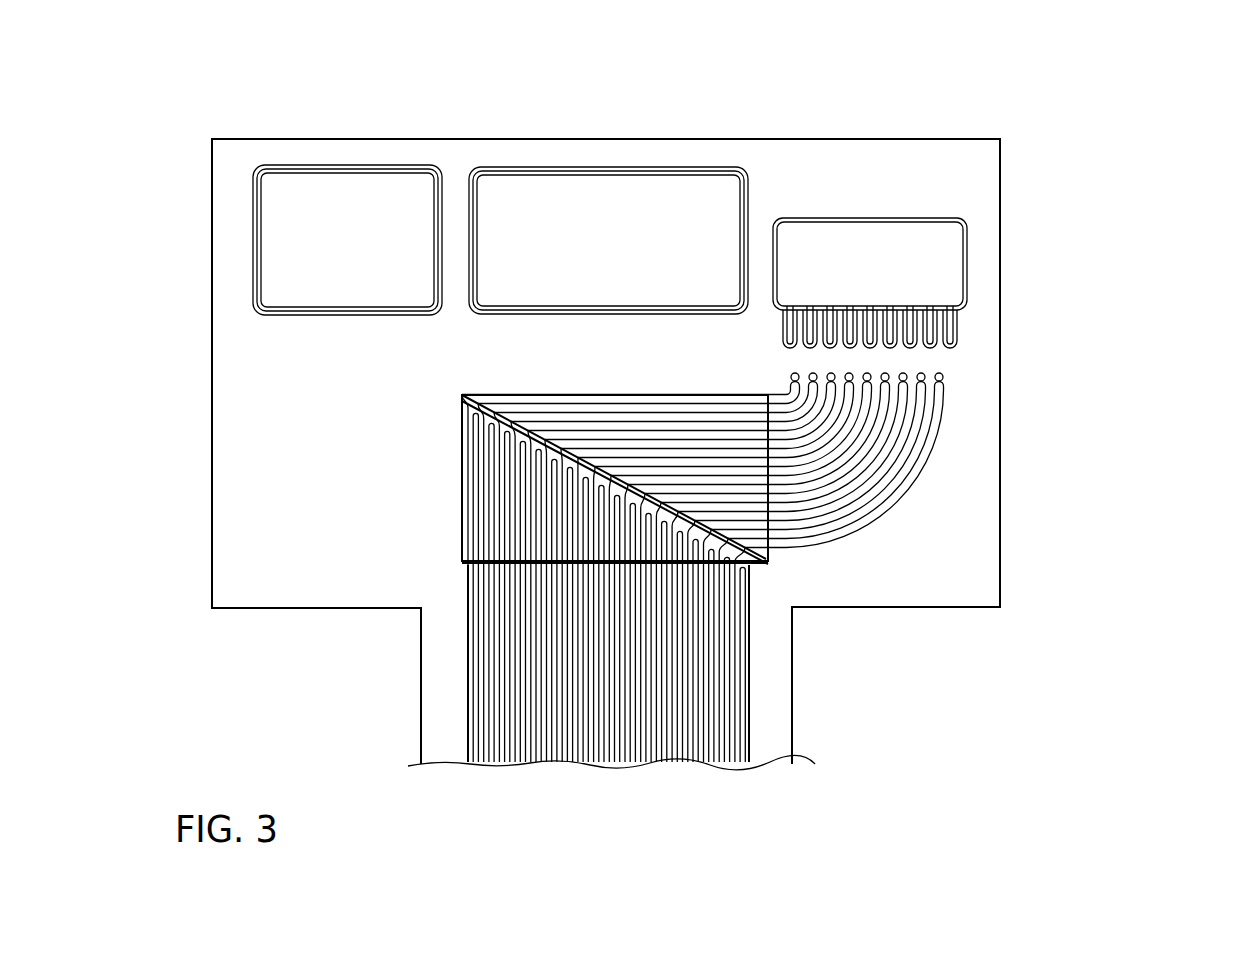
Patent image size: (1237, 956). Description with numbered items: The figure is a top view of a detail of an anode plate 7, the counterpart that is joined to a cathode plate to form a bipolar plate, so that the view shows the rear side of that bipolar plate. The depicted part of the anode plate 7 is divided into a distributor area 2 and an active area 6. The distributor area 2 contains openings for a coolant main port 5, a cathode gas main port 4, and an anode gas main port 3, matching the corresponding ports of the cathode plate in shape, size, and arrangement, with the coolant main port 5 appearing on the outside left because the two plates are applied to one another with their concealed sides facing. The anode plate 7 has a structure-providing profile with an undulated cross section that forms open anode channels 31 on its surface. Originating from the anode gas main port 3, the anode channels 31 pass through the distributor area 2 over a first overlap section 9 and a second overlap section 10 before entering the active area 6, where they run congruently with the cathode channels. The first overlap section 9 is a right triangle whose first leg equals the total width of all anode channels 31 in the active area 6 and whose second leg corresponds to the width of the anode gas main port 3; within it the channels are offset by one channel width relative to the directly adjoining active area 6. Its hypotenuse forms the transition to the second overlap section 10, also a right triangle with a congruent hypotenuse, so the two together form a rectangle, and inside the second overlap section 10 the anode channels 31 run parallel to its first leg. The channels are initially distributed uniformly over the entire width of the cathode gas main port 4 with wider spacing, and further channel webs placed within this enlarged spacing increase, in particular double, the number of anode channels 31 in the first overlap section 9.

The anode plate 7 is at (1167, 118).
The distributor area 2 is at (1133, 139).
The anode gas main port 3 is at (879, 242).
The cathode gas main port 4 is at (598, 190).
The coolant main port 5 is at (372, 187).
The active area 6 is at (1135, 600).
The first overlap section 9 is at (462, 540).
The second overlap section 10 is at (768, 546).
The anode channels 31 is at (893, 496).